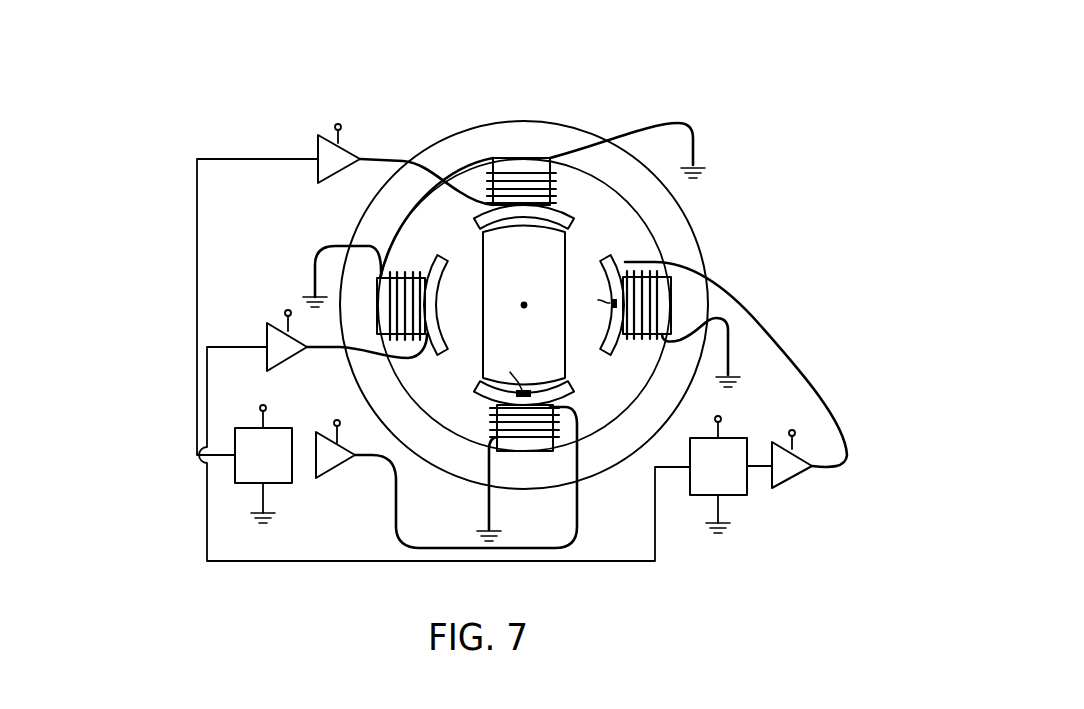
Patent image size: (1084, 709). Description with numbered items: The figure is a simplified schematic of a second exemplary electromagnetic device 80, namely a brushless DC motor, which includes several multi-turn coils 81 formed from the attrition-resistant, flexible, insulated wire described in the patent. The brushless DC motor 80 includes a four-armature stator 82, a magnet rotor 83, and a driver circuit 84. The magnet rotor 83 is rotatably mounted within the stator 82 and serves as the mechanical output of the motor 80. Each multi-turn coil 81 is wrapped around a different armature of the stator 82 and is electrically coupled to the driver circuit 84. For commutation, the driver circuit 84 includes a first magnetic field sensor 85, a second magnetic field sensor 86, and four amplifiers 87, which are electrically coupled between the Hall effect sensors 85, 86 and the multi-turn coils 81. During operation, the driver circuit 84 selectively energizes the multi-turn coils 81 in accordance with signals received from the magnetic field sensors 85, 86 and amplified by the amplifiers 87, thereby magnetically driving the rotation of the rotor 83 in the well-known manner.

The electromagnetic device 80 is at (762, 131).
The multi-turn coils 81 is at (519, 172).
The four-armature stator 82 is at (568, 128).
The magnet rotor 83 is at (500, 283).
The driver circuit 84 is at (207, 535).
The first magnetic field sensor 85 is at (245, 428).
The second magnetic field sensor 86 is at (745, 495).
The amplifiers 87 is at (317, 150).